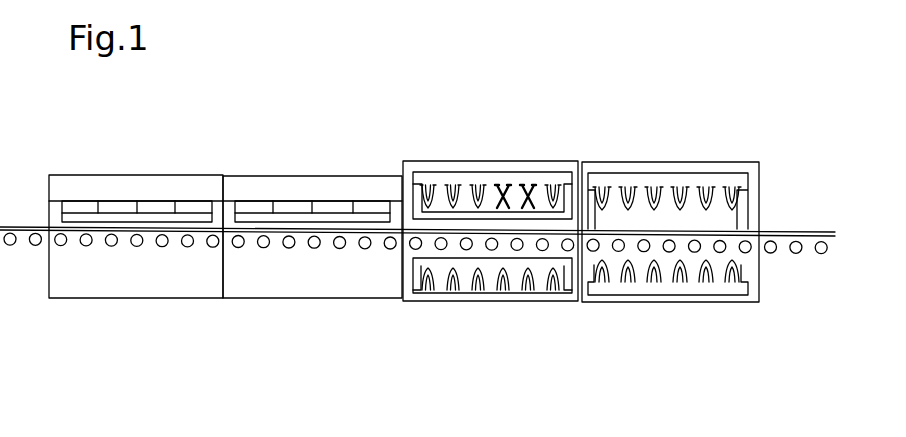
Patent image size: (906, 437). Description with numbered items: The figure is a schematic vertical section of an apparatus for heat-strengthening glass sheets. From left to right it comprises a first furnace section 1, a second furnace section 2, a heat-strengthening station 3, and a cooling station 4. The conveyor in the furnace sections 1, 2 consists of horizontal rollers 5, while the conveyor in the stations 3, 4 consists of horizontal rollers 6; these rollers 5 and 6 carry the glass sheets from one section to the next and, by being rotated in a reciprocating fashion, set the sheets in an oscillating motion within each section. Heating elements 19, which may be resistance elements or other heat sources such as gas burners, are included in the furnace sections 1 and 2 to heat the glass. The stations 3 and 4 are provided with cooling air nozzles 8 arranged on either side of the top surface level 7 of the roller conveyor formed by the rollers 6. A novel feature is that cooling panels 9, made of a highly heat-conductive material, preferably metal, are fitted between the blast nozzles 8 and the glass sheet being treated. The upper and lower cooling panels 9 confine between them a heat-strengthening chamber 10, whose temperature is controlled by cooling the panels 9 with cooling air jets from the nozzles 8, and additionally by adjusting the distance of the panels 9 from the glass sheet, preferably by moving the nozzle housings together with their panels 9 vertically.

The first furnace section 1 is at (158, 287).
The second furnace section 2 is at (330, 287).
The heat-strengthening station 3 is at (516, 302).
The cooling station 4 is at (656, 302).
The horizontal rollers 5 is at (287, 250).
The horizontal rollers 6 is at (545, 240).
The top surface level 7 is at (715, 232).
The cooling air nozzles 8 is at (530, 186).
The cooling panels 9 is at (490, 128).
The heat-strengthening chamber 10 is at (437, 222).
The heating elements 19 is at (277, 213).